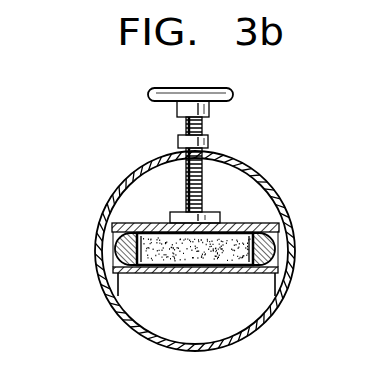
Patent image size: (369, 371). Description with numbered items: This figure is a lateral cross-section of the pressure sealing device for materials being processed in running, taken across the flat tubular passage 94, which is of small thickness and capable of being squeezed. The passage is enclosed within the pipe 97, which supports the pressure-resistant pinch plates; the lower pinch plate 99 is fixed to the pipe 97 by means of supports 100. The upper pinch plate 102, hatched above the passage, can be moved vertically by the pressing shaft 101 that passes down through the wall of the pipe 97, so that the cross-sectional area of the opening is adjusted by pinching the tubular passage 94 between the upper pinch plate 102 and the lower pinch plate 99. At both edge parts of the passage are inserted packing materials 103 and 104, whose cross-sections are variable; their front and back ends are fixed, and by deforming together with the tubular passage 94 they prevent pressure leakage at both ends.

The tubular passage 94 is at (106, 227).
The pipe 97 is at (286, 274).
The lower pinch plate 99 is at (152, 274).
The supports 100 is at (240, 317).
The pressing shaft 101 is at (202, 190).
The top pressure plate 102 is at (162, 223).
The packing material 103 is at (116, 247).
The packing material 104 is at (276, 247).